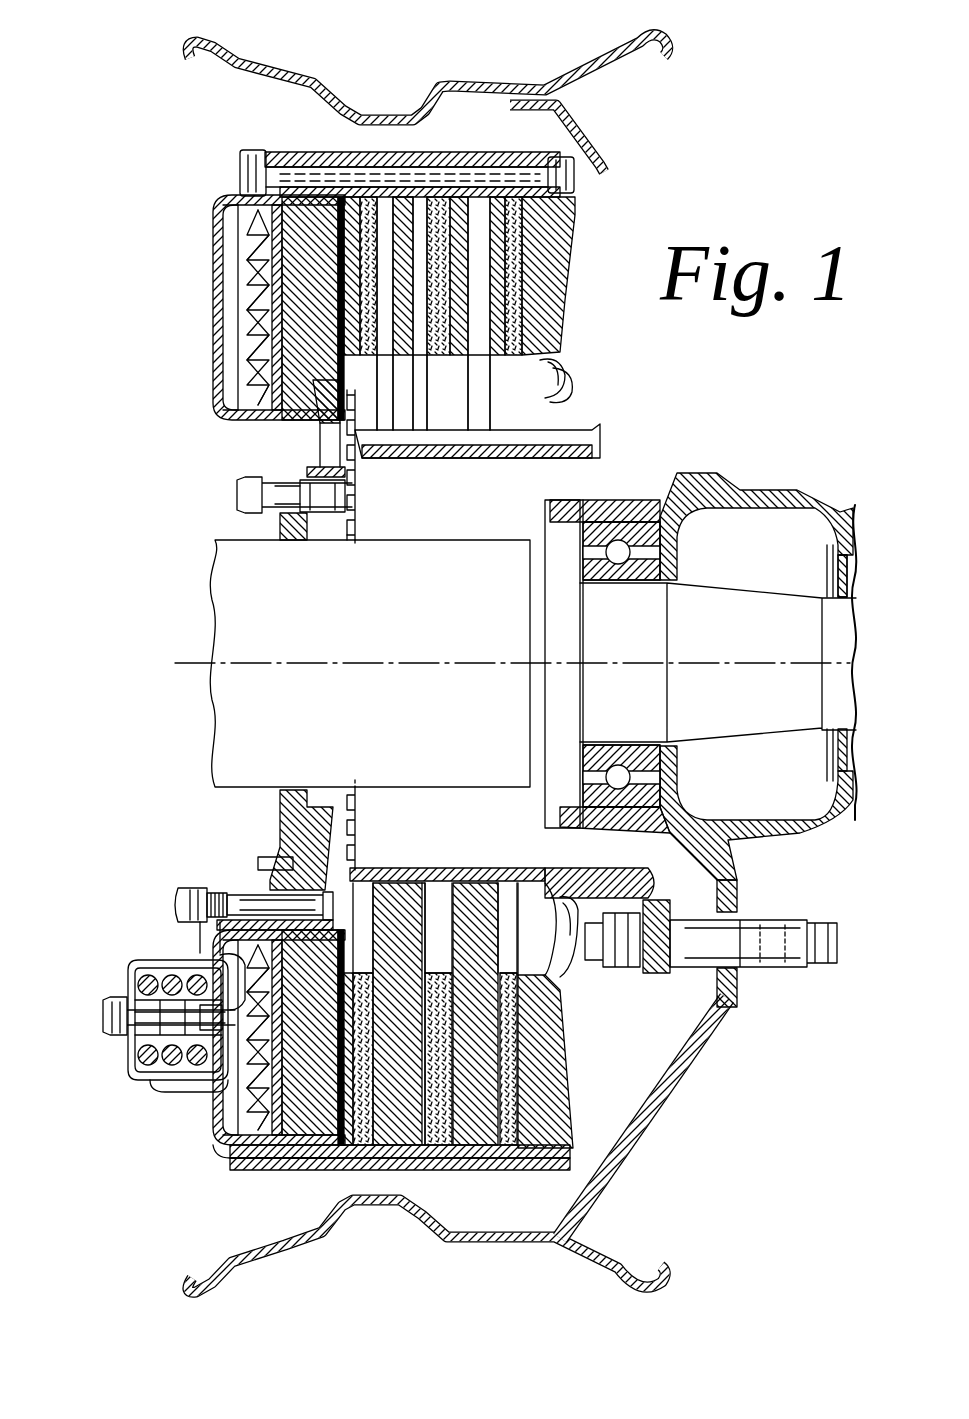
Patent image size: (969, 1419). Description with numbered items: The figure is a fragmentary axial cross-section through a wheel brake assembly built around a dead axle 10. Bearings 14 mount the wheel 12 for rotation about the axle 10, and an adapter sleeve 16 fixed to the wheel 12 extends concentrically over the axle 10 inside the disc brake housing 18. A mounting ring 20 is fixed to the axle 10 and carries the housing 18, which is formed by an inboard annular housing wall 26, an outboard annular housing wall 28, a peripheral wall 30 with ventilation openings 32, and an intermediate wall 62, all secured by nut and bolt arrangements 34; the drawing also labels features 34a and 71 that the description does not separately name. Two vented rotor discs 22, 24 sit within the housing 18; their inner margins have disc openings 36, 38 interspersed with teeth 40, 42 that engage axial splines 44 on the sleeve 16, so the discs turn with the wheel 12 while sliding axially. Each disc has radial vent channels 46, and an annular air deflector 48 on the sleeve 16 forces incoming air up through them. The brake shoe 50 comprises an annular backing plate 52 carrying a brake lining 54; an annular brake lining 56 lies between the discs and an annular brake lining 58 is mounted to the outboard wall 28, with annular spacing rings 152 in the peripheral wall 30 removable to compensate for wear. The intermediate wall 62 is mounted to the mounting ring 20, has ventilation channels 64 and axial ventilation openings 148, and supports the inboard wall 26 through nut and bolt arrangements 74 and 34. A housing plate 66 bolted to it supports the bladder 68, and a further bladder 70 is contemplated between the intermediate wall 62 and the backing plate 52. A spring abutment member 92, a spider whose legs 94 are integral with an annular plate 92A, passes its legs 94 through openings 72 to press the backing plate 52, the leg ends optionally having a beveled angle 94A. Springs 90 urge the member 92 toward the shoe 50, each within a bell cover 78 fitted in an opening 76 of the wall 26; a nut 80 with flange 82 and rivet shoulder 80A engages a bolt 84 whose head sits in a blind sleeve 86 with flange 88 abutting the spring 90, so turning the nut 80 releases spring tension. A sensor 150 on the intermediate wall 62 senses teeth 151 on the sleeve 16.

The axle 10 is at (208, 718).
The wheel 12 is at (578, 80).
The bearings 14 is at (640, 530).
The adapter sleeve 16 is at (600, 432).
The disc brake housing 18 is at (448, 148).
The mounting ring 20 is at (300, 532).
The rotor disc 22 is at (395, 200).
The rotor disc 24 is at (495, 200).
The annular housing wall 26 is at (215, 302).
The annular housing wall 28 is at (573, 258).
The peripheral wall 30 is at (415, 152).
The ventilation openings 32 is at (448, 1155).
The nut and bolt arrangements 34 is at (310, 215).
The plate portion 34a is at (490, 195).
The disc openings 36 is at (422, 432).
The disc openings 38 is at (482, 410).
The teeth 40 is at (398, 400).
The teeth 42 is at (500, 410).
The axial splines 44 is at (472, 432).
The radial vent channels 46 is at (485, 297).
The annular air deflector 48 is at (548, 378).
The brake shoe 50 is at (352, 200).
The annular backing plate 52 is at (340, 265).
The brake lining 54 is at (384, 410).
The annular brake lining 56 is at (440, 410).
The annular brake lining 58 is at (562, 392).
The intermediate wall 62 is at (300, 200).
The ventilation channels 64 is at (275, 372).
The housing plate 66 is at (262, 160).
The bladder 68 is at (212, 233).
The bladder 70 is at (343, 200).
The bolt head 71 is at (237, 498).
The openings 72 is at (288, 1172).
The nut and bolt arrangements 74 is at (245, 905).
The opening 76 is at (215, 963).
The bell cover 78 is at (150, 1075).
The nut 80 is at (105, 1015).
The rivet shoulder 80A is at (135, 998).
The flange 82 is at (145, 978).
The bolt 84 is at (140, 1035).
The blind sleeve 86 is at (213, 978).
The flange 88 is at (230, 1033).
The springs 90 is at (150, 1082).
The spring abutment member 92 is at (240, 322).
The annular plate 92A is at (240, 265).
The legs 94 is at (225, 1170).
The beveled angle 94A is at (282, 1175).
The axial ventilation openings 148 is at (262, 486).
The antilock-brake sensor 150 is at (285, 815).
The teeth 151 is at (348, 815).
The annular spacing rings 152 is at (370, 200).